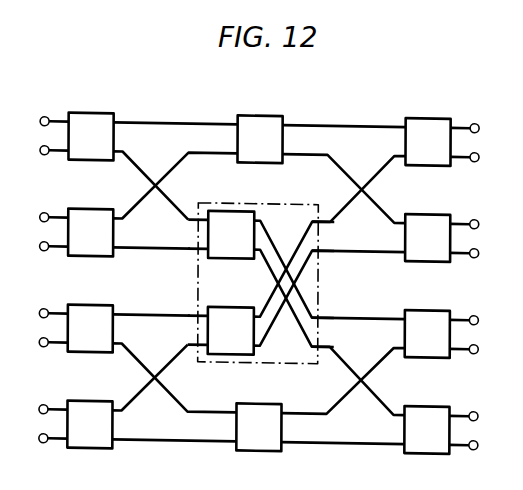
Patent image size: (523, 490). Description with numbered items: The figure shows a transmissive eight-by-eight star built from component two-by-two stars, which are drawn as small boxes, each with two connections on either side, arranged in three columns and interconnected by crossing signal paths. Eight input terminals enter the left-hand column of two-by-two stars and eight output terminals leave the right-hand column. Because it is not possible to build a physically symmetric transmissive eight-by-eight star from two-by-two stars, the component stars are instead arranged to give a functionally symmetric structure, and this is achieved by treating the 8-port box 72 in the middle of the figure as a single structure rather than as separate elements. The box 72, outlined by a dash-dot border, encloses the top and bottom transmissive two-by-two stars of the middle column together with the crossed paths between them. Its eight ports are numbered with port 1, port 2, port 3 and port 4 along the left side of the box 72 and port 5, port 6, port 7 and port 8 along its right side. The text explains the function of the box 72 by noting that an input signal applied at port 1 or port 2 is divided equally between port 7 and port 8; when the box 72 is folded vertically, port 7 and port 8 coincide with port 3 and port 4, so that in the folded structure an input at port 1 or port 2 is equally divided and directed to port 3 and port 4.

The 8-port box 72 is at (293, 202).
The port 1 is at (198, 231).
The port 2 is at (198, 260).
The port 3 is at (197, 305).
The port 4 is at (197, 333).
The port 5 is at (323, 234).
The port 6 is at (323, 261).
The port 7 is at (323, 306).
The port 8 is at (323, 334).